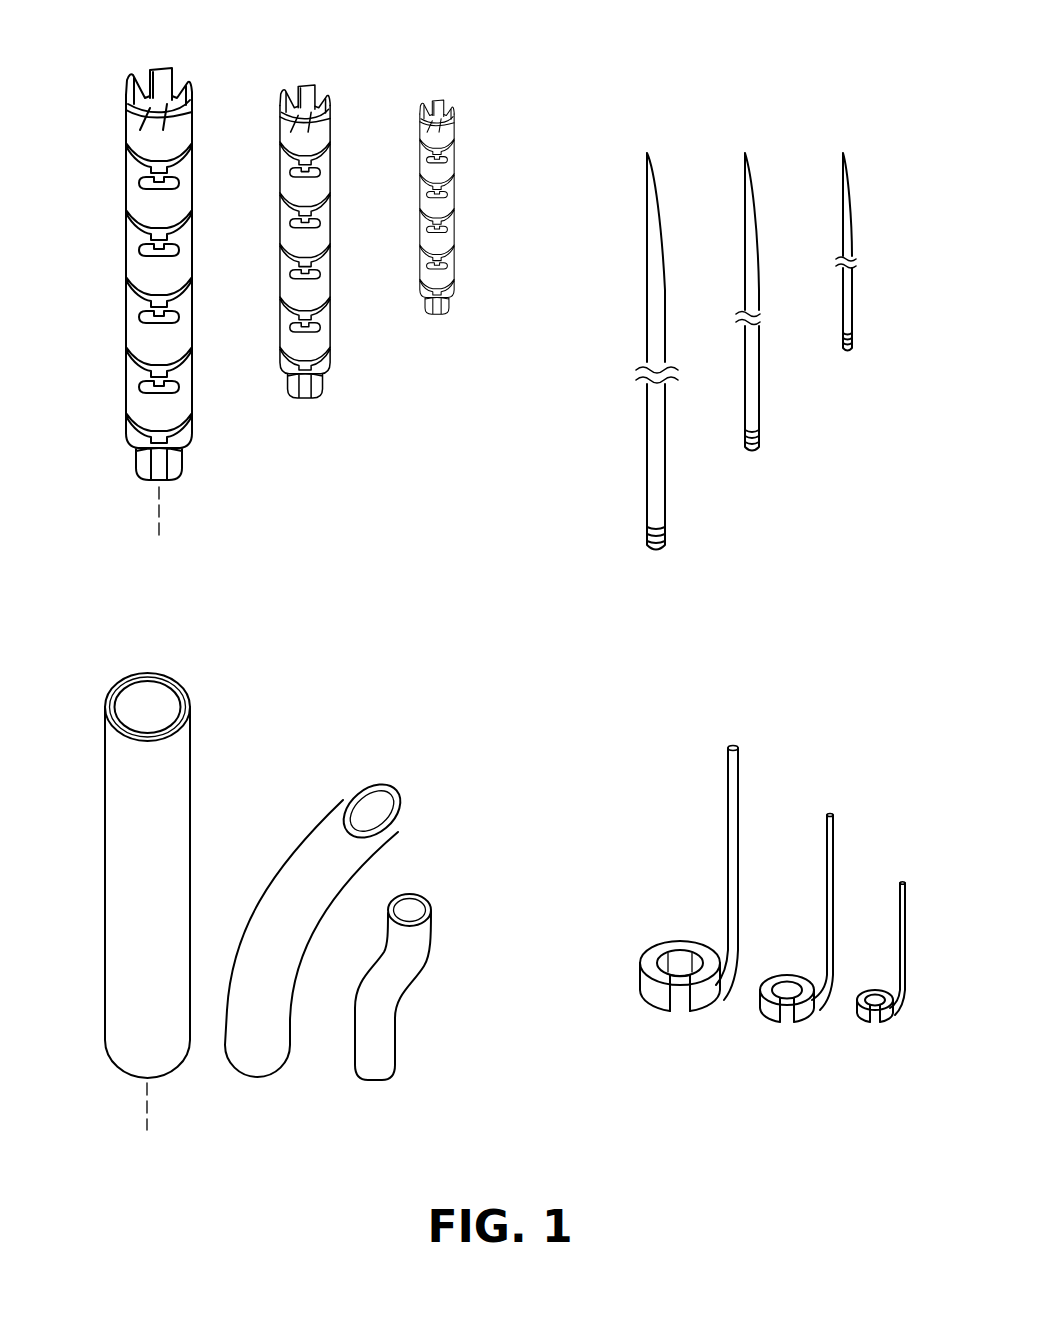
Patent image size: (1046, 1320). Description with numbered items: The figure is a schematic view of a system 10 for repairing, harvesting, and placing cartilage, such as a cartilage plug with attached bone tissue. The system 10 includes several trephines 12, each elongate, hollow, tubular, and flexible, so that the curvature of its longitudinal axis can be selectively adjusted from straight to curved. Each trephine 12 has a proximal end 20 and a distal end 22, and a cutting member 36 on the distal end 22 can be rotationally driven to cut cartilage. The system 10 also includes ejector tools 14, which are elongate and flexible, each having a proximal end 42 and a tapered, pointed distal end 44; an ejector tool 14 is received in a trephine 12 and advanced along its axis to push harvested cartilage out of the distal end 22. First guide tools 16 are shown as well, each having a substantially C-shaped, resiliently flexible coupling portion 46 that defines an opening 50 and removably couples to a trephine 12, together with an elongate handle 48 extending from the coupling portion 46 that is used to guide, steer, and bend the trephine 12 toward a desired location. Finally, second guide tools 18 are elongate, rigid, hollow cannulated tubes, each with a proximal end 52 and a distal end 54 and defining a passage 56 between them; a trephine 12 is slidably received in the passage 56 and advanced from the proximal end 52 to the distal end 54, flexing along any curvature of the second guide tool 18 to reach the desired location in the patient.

The system 10 is at (537, 109).
The trephine 12 is at (115, 563).
The ejector tool 14 is at (622, 628).
The first guide tool 16 is at (632, 1095).
The second guide tool 18 is at (443, 1163).
The proximal end 20 is at (183, 459).
The distal end 22 is at (194, 116).
The cutting member 36 is at (160, 68).
The proximal end 42 is at (648, 528).
The distal end 44 is at (648, 153).
The coupling portion 46 is at (653, 1005).
The handle 48 is at (733, 845).
The opening 50 is at (683, 1012).
The proximal end 52 is at (105, 1037).
The distal end 54 is at (105, 721).
The passage 56 is at (148, 672).